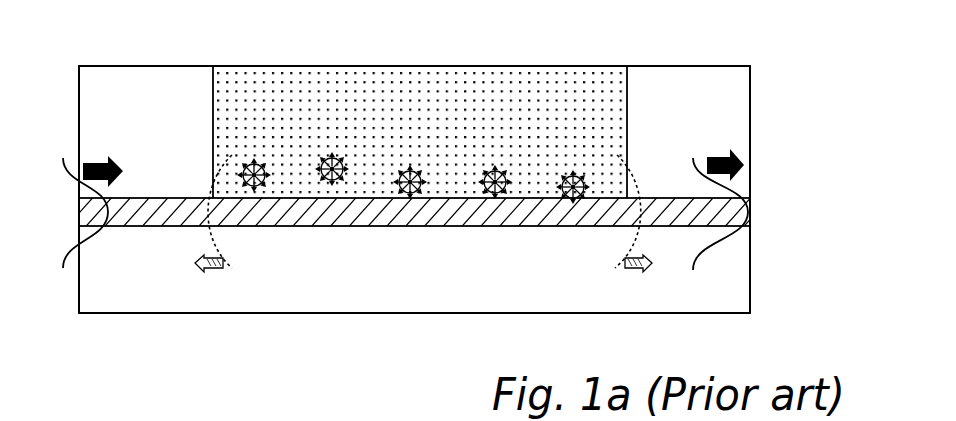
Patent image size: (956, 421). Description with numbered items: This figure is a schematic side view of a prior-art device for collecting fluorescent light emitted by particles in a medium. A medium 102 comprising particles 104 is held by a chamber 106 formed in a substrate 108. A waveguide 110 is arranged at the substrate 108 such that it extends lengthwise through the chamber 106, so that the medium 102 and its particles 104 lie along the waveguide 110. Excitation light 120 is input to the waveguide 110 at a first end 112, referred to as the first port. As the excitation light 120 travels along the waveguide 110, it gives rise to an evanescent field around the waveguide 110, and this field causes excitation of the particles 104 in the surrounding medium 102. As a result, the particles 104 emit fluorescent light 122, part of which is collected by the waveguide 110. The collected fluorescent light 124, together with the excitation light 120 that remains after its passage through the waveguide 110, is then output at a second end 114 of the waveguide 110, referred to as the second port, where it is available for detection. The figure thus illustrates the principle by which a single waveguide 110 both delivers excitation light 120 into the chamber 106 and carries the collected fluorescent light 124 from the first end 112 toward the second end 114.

The medium 102 is at (480, 88).
The particles 104 is at (503, 177).
The chamber 106 is at (213, 152).
The substrate 108 is at (142, 78).
The waveguide 110 is at (328, 223).
The first end 112 is at (77, 228).
The second end 114 is at (750, 227).
The excitation light 120 is at (103, 160).
The fluorescent light 122 is at (347, 160).
The collected fluorescent light 124 is at (632, 268).